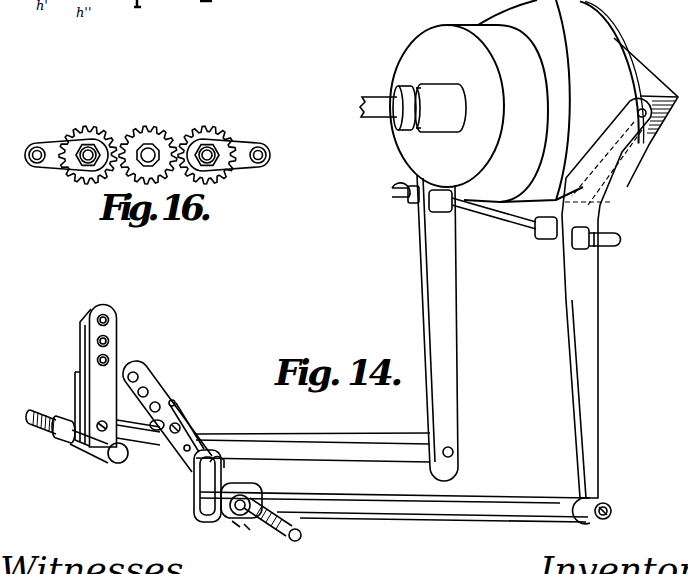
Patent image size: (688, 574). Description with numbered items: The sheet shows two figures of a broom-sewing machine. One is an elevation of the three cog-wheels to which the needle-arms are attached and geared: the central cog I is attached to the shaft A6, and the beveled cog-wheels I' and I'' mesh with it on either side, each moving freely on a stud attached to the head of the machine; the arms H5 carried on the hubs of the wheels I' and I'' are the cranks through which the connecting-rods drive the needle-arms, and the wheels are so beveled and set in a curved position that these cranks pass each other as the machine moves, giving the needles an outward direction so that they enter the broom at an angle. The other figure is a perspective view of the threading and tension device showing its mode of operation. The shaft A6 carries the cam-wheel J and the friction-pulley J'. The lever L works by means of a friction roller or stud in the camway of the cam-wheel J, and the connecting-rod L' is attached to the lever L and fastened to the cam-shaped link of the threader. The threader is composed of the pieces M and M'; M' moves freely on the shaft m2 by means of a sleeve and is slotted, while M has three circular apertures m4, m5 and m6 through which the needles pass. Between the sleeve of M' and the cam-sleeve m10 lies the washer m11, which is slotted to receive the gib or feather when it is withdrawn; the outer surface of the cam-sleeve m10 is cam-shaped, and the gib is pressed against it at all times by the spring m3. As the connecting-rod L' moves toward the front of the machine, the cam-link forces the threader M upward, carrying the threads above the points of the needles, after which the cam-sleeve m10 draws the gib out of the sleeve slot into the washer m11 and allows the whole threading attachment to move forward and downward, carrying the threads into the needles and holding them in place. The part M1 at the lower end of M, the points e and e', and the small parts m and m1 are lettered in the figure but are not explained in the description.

In FIG. 16, the beveled cog-wheel I'' is at (88, 146).
In FIG. 16, the cog I is at (148, 146).
In FIG. 16, the beveled cog-wheel I' is at (207, 146).
In FIG. 16, the arm H5 is at (147, 155).
In FIG. 14, the cam-wheel J is at (561, 101).
In FIG. 14, the friction-pulley J' is at (469, 113).
In FIG. 14, the shaft A6 is at (413, 105).
In FIG. 14, the lever L is at (606, 298).
In FIG. 14, the connecting-rod L' is at (395, 502).
In FIG. 14, the pivot e is at (599, 511).
In FIG. 14, the threader piece M' is at (83, 384).
In FIG. 14, the rod M1 is at (273, 441).
In FIG. 14, the threader piece M is at (167, 416).
In FIG. 14, the circular aperture m4 is at (146, 367).
In FIG. 14, the circular aperture m5 is at (156, 389).
In FIG. 14, the circular aperture m6 is at (168, 404).
In FIG. 14, the clamp e' is at (191, 486).
In FIG. 14, the clip m is at (214, 457).
In FIG. 14, the bracket m1 is at (241, 491).
In FIG. 14, the spring m3 is at (287, 527).
In FIG. 14, the shaft m2 is at (303, 537).
In FIG. 14, the washer m11 is at (236, 533).
In FIG. 14, the cam-sleeve m10 is at (248, 531).